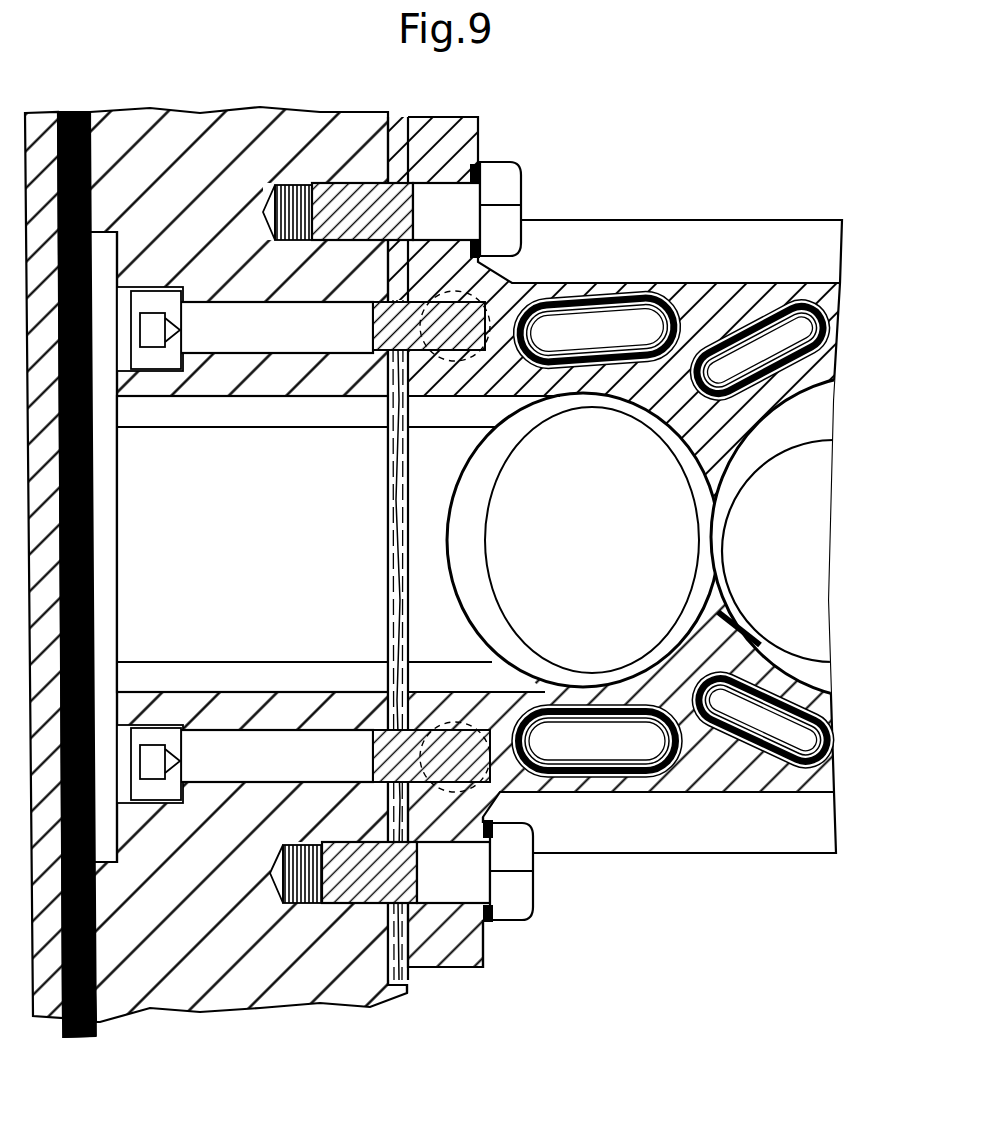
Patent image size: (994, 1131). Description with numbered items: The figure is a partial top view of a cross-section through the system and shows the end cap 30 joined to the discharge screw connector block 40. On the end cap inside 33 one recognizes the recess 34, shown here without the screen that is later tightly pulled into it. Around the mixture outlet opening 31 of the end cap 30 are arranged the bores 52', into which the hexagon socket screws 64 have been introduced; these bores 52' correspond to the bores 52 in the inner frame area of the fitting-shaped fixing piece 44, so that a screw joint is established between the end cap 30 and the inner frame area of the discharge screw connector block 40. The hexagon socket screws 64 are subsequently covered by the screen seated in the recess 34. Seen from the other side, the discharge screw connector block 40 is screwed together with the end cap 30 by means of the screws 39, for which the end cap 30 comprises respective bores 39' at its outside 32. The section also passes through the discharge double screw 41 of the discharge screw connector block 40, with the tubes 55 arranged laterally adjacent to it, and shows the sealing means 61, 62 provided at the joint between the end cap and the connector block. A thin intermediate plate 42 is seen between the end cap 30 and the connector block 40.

The end cap 30 is at (212, 108).
The mixture outlet opening 31 is at (120, 515).
The end cap outside 32 is at (406, 985).
The end cap inside 33 is at (96, 1036).
The recess 34 is at (100, 867).
The screws 39 is at (401, 916).
The bores 39' is at (318, 964).
The discharge screw connector block 40 is at (750, 780).
The discharge double screw 41 is at (598, 517).
The intermediate plate 42 is at (390, 495).
The fitting-shaped fixing piece 44 is at (483, 953).
The bores 52 is at (474, 824).
The bores 52' is at (245, 904).
The tubes 55 is at (606, 782).
The sealing means 61 is at (38, 112).
The sealing means 62 is at (76, 112).
The hexagon socket screws 64 is at (258, 783).